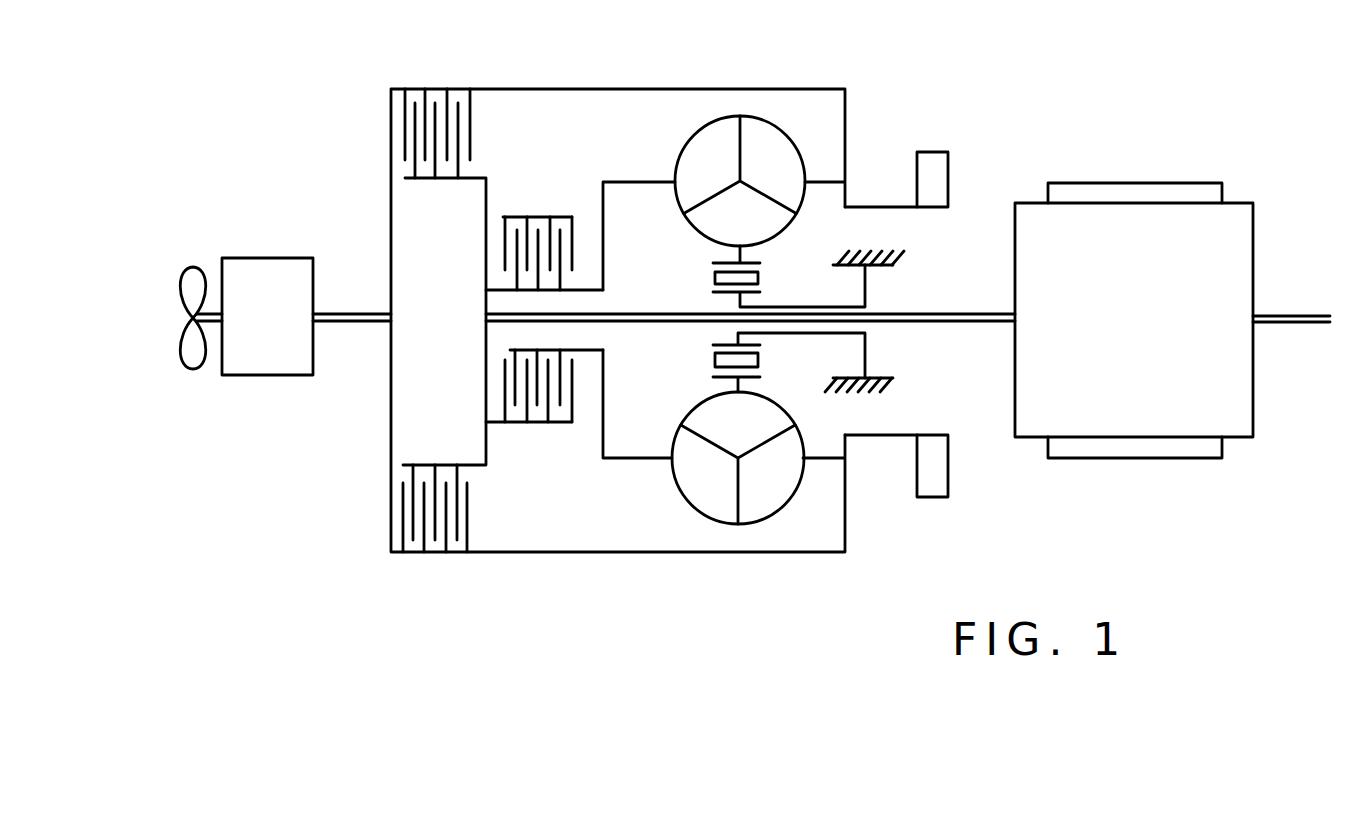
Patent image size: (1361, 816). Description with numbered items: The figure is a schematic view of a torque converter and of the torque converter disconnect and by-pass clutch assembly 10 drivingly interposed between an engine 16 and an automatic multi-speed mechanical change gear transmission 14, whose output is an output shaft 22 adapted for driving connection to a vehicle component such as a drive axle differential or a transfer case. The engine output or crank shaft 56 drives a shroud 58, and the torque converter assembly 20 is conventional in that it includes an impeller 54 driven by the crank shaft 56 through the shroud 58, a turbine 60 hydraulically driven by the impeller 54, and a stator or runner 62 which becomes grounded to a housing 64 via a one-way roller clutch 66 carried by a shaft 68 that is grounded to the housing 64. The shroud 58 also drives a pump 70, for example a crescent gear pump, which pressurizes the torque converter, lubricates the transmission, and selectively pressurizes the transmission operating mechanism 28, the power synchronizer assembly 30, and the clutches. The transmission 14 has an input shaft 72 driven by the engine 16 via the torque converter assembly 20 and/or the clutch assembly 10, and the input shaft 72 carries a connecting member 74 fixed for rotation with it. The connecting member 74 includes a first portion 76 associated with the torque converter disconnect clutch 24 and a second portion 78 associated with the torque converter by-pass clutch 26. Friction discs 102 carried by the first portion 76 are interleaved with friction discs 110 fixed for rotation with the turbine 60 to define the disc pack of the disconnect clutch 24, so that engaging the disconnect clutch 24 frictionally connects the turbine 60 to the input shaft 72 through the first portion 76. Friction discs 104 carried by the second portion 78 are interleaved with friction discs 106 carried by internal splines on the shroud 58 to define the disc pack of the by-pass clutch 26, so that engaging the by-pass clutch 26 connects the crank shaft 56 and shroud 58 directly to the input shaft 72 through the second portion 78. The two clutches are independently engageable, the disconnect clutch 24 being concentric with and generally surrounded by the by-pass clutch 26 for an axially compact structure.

The torque converter disconnect and by-pass clutch assembly 10 is at (470, 500).
The automatic multi-speed mechanical change gear transmission 14 is at (1238, 258).
The engine 16 is at (279, 277).
The torque converter assembly 20 is at (740, 75).
The output shaft 22 is at (1313, 323).
The torque converter disconnect clutch 24 is at (554, 214).
The torque converter by-pass clutch 26 is at (472, 536).
The transmission operating mechanism 28 is at (1125, 190).
The power synchronizer assembly 30 is at (1122, 447).
The impeller 54 is at (776, 170).
The crank shaft 56 is at (352, 314).
The shroud 58 is at (588, 89).
The turbine 60 is at (702, 152).
The stator 62 is at (711, 224).
The housing 64 is at (892, 259).
The one-way roller clutch 66 is at (711, 363).
The shaft 68 is at (780, 334).
The pump 70 is at (940, 170).
The transmission input shaft 72 is at (920, 322).
The connecting member 74 is at (487, 350).
The first portion 76 is at (514, 424).
The second portion 78 is at (447, 180).
The friction discs 102 is at (505, 240).
The friction discs 104 is at (411, 508).
The friction discs 106 is at (472, 122).
The friction discs 110 is at (516, 283).